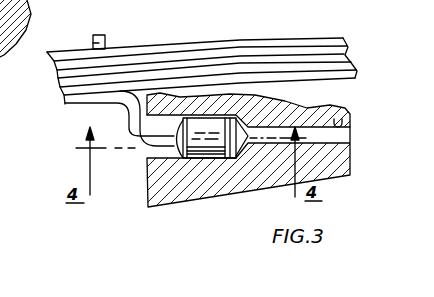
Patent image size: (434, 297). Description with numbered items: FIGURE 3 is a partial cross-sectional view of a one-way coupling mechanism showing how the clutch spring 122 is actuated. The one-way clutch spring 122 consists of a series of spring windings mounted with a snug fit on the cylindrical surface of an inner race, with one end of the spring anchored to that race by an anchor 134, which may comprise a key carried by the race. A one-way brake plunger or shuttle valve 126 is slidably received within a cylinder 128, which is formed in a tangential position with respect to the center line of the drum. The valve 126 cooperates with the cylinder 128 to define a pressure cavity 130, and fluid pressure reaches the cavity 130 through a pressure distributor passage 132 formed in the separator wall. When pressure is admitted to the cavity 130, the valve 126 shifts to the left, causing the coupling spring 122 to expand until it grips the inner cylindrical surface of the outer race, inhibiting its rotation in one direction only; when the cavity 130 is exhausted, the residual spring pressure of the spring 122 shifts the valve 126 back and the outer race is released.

The one-way clutch spring 122 is at (251, 63).
The one-way brake plunger or shuttle valve 126 is at (213, 137).
The cylinder 128 is at (162, 126).
The pressure cavity 130 is at (242, 138).
The pressure distributor passage 132 is at (339, 119).
The anchor 134 is at (94, 38).